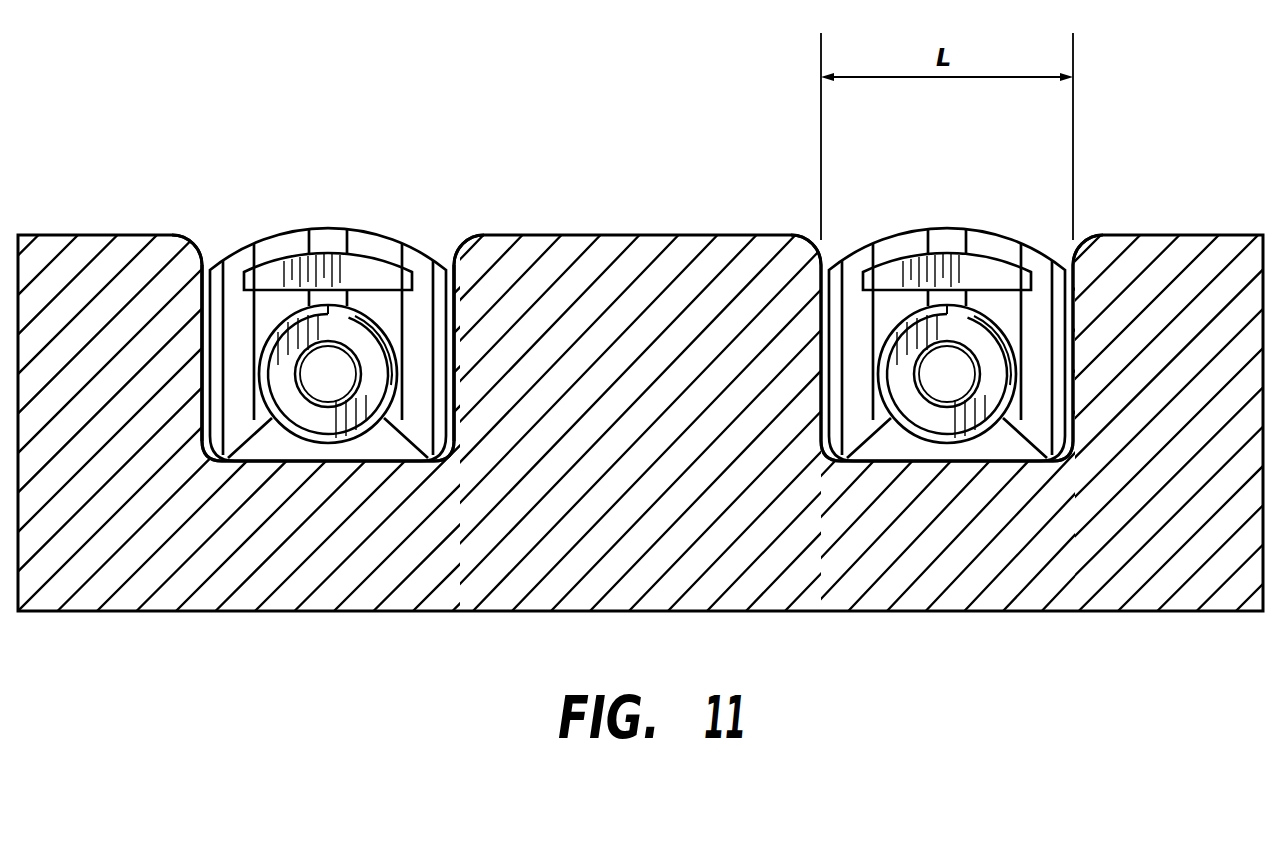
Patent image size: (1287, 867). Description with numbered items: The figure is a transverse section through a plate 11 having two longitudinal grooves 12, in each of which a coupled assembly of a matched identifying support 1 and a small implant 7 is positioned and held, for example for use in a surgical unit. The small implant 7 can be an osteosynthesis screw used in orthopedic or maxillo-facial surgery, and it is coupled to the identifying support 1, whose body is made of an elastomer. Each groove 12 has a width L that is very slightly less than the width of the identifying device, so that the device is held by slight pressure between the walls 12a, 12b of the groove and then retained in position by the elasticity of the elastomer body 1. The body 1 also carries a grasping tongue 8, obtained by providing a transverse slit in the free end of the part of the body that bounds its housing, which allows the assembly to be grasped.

The identifying support 1 is at (350, 228).
The small implant 7 is at (322, 428).
The grasping tongue 8 is at (298, 231).
The plate 11 is at (623, 236).
The longitudinal groove 12 is at (637, 308).
The wall of the groove 12a is at (446, 318).
The groove side wall 12b is at (212, 318).